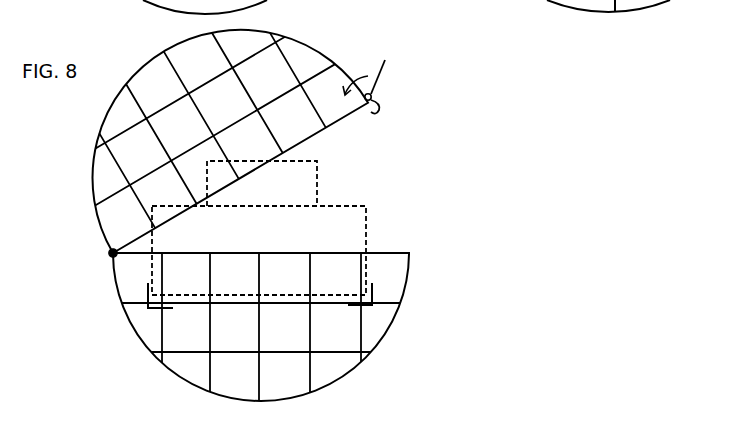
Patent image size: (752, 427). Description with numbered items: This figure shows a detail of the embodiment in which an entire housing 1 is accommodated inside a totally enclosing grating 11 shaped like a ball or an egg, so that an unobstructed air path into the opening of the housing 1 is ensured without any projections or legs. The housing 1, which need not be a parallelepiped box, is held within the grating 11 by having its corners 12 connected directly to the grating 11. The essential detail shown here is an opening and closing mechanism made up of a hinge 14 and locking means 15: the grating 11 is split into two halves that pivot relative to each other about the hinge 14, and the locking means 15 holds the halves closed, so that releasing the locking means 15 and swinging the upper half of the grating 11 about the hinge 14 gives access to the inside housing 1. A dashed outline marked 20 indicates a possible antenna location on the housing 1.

The housing 1 is at (338, 242).
The grating 11 is at (318, 38).
The corners 12 is at (372, 308).
The hinge 14 is at (110, 255).
The locking means 15 is at (387, 88).
The possible antenna location 20 is at (300, 185).